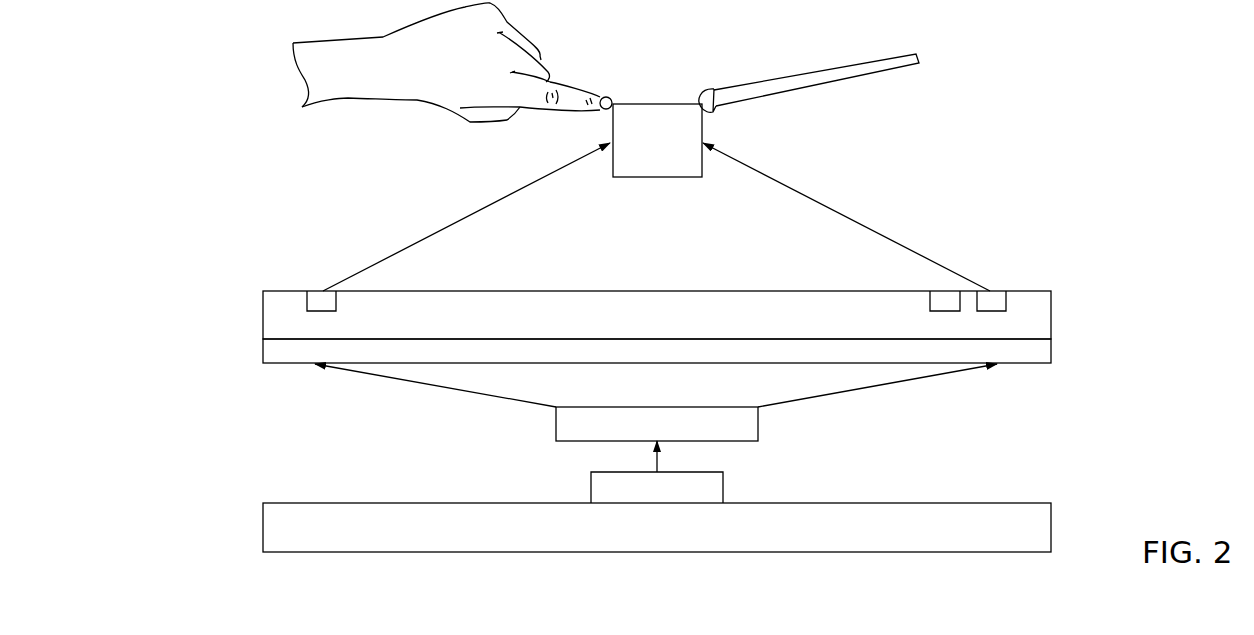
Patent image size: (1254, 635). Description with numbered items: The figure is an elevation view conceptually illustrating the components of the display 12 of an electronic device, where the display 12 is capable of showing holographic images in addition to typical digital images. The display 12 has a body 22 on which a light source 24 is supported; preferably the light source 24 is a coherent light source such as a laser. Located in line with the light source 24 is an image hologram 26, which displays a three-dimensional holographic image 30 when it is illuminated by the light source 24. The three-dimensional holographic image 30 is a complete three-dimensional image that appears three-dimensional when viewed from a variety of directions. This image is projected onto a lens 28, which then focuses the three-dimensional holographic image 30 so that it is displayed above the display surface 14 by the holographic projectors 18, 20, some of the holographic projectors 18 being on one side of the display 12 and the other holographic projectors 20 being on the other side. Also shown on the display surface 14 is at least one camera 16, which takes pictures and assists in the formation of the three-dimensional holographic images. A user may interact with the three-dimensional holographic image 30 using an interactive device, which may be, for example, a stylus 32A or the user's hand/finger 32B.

The display 12 is at (190, 406).
The display surface 14 is at (1051, 313).
The camera 16 is at (940, 297).
The holographic projector 18 is at (1000, 297).
The holographic projector 20 is at (316, 298).
The body 22 is at (1052, 524).
The light source 24 is at (723, 485).
The image hologram 26 is at (758, 420).
The lens 28 is at (1051, 350).
The three-dimensional holographic image 30 is at (655, 103).
The stylus 32A is at (857, 77).
The user's hand/finger 32B is at (347, 98).